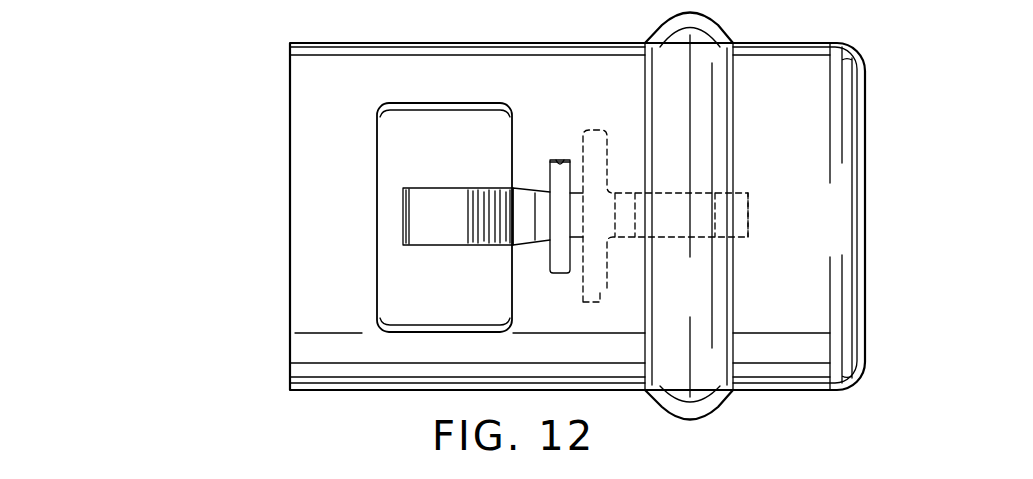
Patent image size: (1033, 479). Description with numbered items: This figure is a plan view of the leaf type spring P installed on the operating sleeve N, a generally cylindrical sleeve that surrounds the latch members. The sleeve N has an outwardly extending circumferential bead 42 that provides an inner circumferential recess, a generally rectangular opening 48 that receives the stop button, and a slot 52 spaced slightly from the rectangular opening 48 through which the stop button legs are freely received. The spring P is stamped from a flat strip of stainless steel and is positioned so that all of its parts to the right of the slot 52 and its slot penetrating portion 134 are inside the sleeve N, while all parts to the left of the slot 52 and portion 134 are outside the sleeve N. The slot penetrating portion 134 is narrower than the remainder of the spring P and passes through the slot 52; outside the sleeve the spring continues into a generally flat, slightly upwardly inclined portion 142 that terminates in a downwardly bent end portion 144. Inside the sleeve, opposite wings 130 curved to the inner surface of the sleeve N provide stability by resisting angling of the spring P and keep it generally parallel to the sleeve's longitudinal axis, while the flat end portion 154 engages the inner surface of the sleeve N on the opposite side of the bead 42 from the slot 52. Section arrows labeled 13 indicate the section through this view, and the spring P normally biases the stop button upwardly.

The operating sleeve N is at (438, 34).
The circumferential bead 42 is at (718, 28).
The rectangular opening 48 is at (427, 108).
The slot 52 is at (562, 165).
The wings 130 is at (596, 140).
The slot penetrating portion 134 is at (558, 225).
The generally flat slightly upwardly inclined portion 142 is at (444, 232).
The downwardly bent end portion 144 is at (405, 228).
The flat end portion 154 is at (752, 195).
The leaf type spring P is at (459, 180).
The section line 13- 13 is at (326, 217).